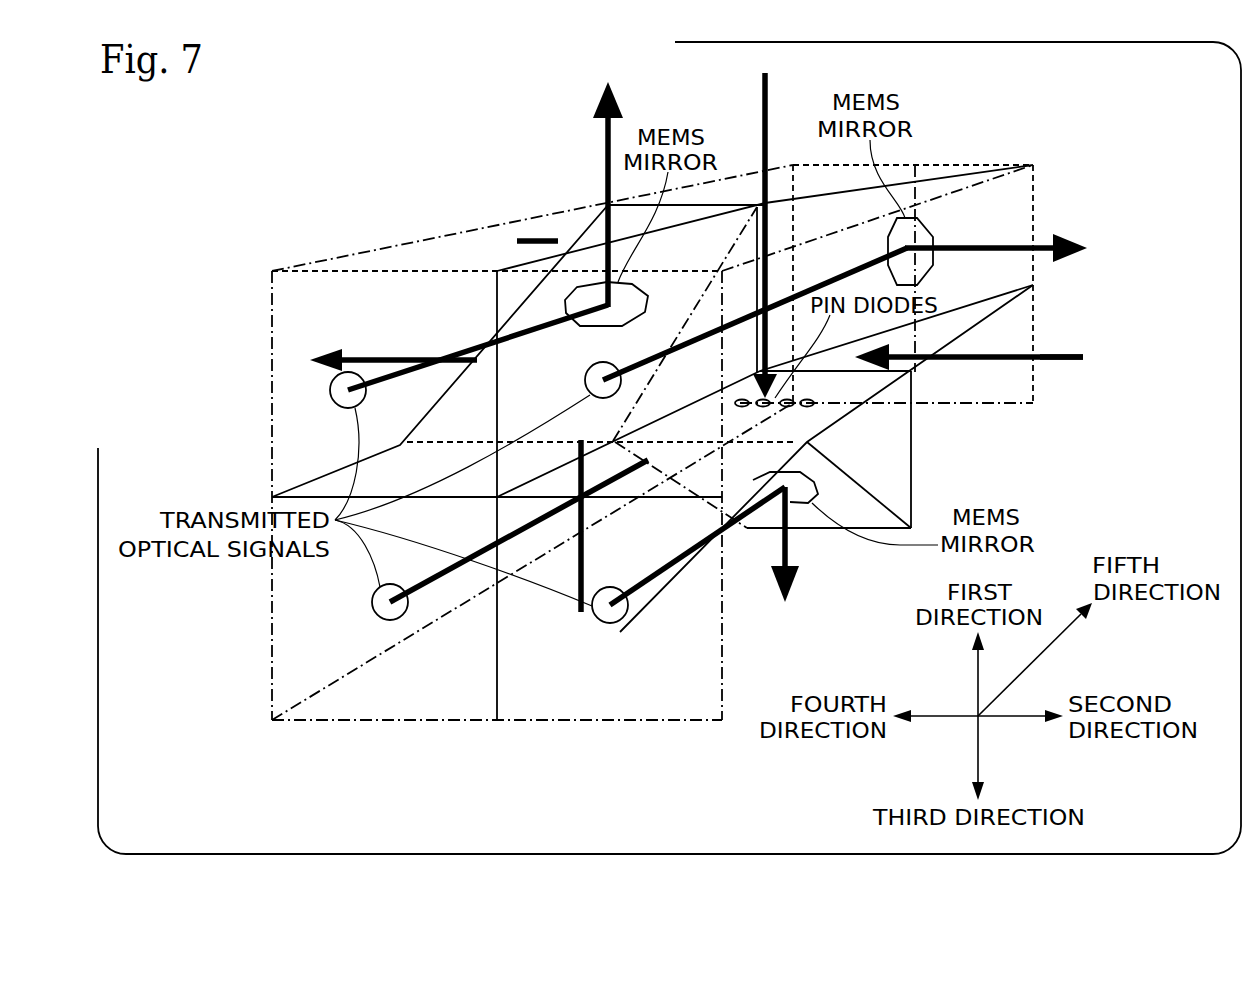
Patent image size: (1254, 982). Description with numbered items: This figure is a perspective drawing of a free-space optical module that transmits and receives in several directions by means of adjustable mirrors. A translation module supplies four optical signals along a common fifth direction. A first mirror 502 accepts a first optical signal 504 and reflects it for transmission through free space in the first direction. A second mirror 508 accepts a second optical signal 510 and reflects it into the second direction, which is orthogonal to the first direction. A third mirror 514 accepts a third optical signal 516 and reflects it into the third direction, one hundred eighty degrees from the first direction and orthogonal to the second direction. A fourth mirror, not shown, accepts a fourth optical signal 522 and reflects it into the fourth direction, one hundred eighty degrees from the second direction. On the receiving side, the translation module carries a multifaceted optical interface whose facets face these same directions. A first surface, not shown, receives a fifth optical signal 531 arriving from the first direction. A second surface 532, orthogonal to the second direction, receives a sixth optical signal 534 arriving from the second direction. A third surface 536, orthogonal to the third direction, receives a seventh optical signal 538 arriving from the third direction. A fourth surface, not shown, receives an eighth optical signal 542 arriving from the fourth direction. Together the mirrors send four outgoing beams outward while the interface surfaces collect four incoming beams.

The first mirror 502 is at (597, 328).
The first optical signal 504 is at (475, 353).
The second mirror 508 is at (932, 236).
The second optical signal 510 is at (696, 345).
The third mirror 514 is at (812, 497).
The third optical signal 516 is at (668, 568).
The fourth optical signal 522 is at (442, 574).
The fifth optical signal 531 is at (558, 241).
The second surface 532 is at (810, 436).
The sixth optical signal 534 is at (763, 118).
The third surface 536 is at (945, 330).
The seventh optical signal 538 is at (1050, 356).
The eighth optical signal 542 is at (584, 545).